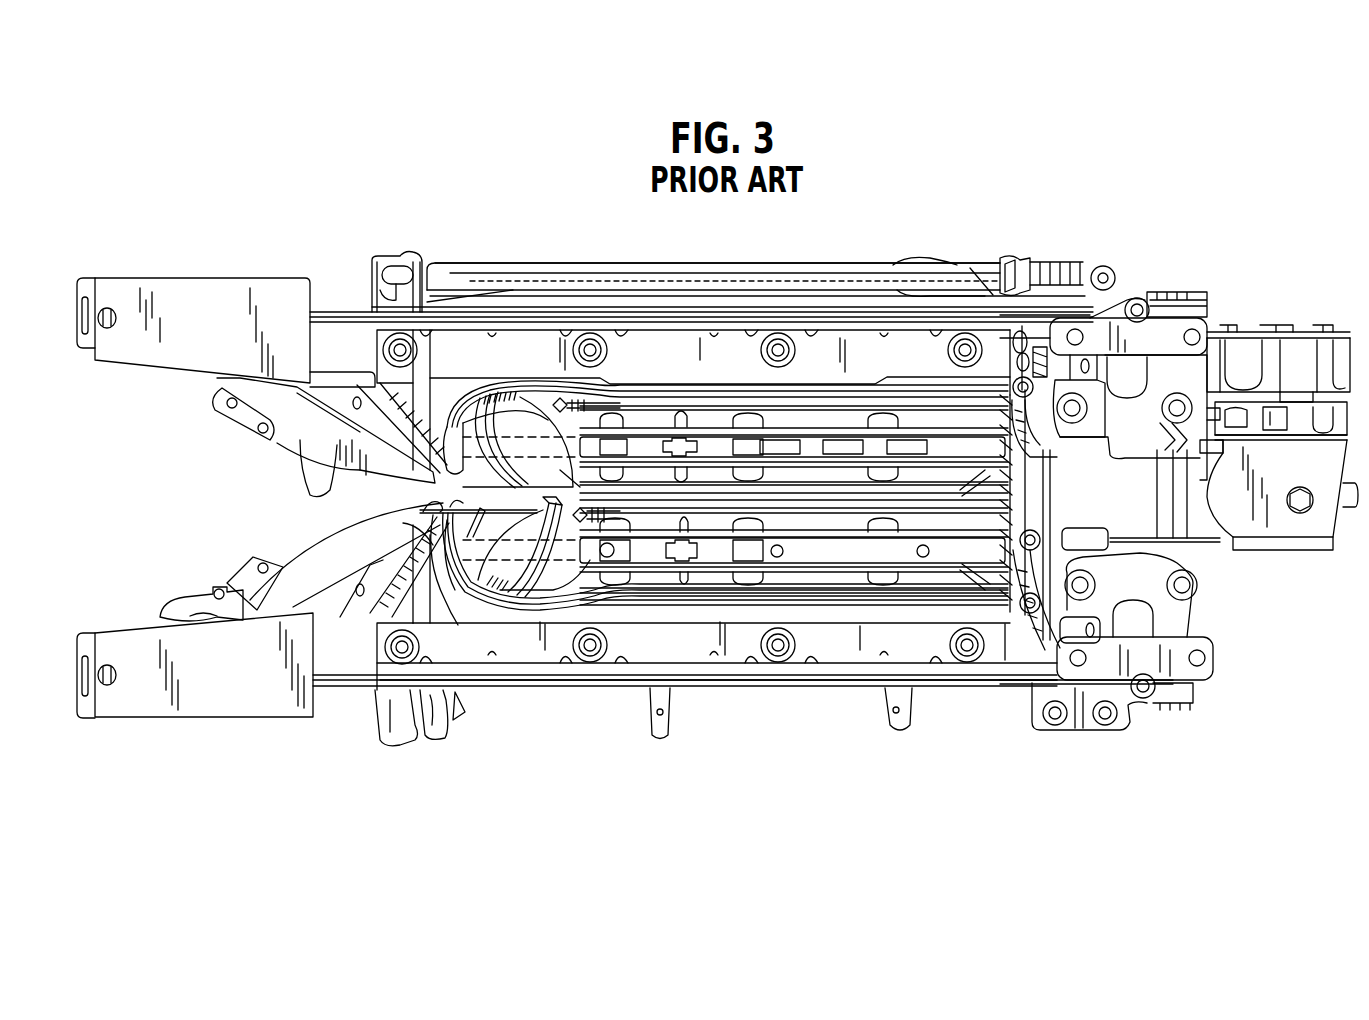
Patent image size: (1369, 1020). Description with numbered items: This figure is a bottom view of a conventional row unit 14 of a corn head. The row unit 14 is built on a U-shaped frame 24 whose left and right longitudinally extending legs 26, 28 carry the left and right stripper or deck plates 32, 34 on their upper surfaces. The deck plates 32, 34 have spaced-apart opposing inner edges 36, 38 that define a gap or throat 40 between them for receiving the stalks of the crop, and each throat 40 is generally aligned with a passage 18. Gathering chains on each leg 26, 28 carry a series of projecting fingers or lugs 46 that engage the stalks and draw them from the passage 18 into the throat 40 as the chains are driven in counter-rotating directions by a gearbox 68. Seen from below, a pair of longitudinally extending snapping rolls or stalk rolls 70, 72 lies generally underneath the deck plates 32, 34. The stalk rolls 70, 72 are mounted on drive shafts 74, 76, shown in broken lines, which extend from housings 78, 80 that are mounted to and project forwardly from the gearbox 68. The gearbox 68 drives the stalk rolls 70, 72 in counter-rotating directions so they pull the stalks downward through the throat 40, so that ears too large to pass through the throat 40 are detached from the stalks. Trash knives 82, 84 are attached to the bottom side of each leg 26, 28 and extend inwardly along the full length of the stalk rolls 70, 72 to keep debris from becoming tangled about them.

The row unit 14 is at (208, 136).
The passage 18 is at (112, 452).
The U-shaped frame 24 is at (252, 256).
The left leg 26 is at (338, 266).
The right leg 28 is at (342, 700).
The left deck plate 32 is at (300, 424).
The right deck plate 34 is at (300, 572).
The inner edge of left deck plate 36 is at (462, 397).
The inner edge of right deck plate 38 is at (450, 522).
The throat 40 is at (386, 498).
The lugs 46 is at (178, 606).
The gearbox 68 is at (1243, 590).
The left stalk roll 70 is at (518, 432).
The right stalk roll 72 is at (549, 592).
The drive shaft 74 is at (860, 420).
The drive shaft 76 is at (815, 565).
The housing 78 is at (938, 408).
The housing 80 is at (898, 590).
The trash knife 82 is at (449, 350).
The trash knife 84 is at (450, 640).